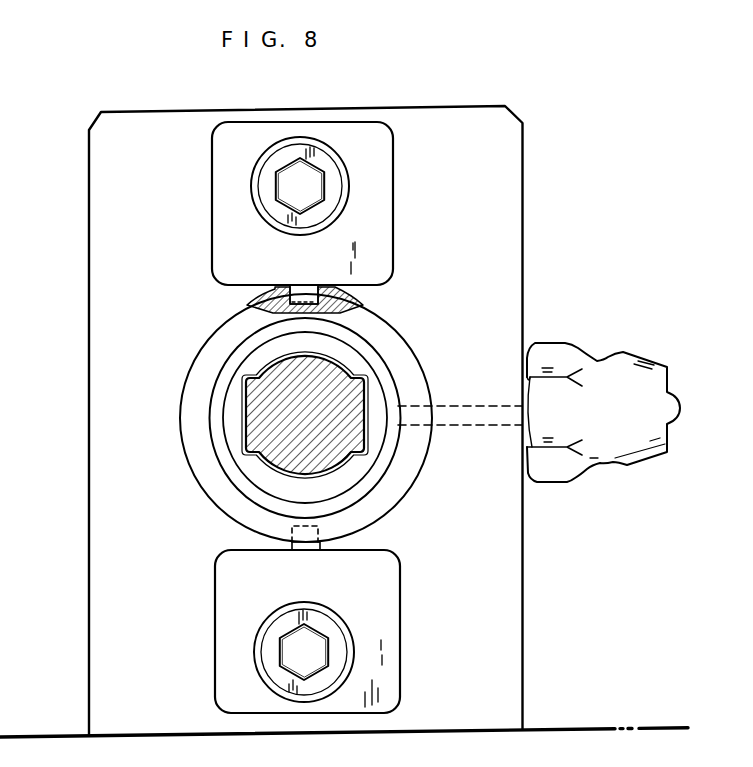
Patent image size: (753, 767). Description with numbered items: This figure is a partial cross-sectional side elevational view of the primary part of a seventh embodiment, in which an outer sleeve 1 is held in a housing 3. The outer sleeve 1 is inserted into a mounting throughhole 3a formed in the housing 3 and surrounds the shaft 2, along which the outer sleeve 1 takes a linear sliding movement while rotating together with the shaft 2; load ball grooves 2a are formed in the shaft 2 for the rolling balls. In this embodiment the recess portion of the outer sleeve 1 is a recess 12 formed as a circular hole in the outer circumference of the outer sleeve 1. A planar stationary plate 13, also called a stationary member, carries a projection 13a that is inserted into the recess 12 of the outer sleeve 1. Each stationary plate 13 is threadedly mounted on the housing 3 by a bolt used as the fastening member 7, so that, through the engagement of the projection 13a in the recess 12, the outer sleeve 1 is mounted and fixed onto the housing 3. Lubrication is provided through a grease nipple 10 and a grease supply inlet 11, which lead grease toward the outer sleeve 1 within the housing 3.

The outer sleeve 1 is at (198, 470).
The shaft 2 is at (272, 472).
The load ball grooves 2a is at (247, 447).
The housing 3 is at (90, 318).
The mounting throughhole 3a is at (408, 490).
The fastening member 7 is at (263, 170).
The grease nipple 10 is at (609, 359).
The grease supply inlet 11 is at (464, 407).
The recess 12 is at (256, 312).
The stationary plate 13 is at (218, 198).
The projection 13a is at (345, 299).